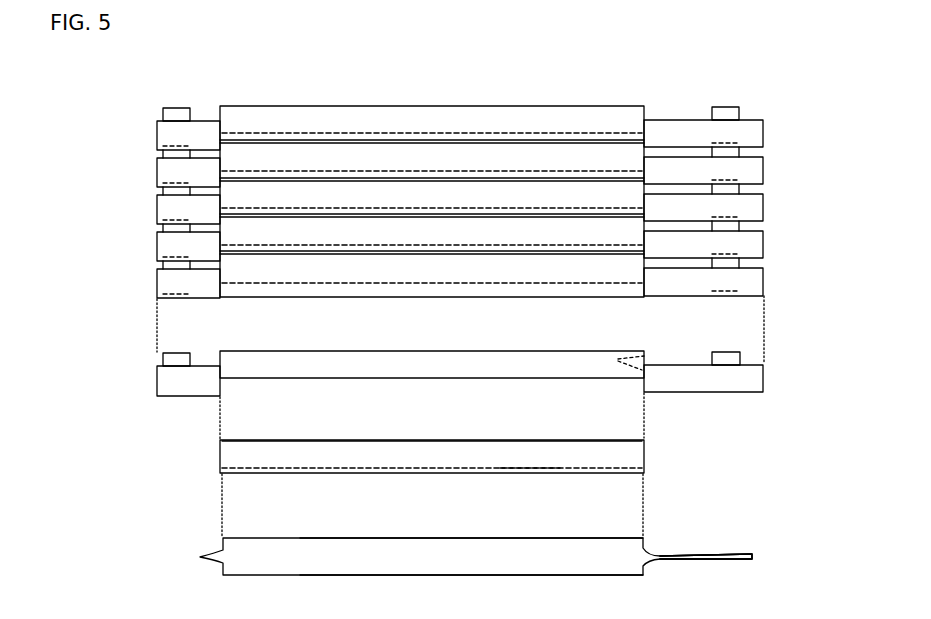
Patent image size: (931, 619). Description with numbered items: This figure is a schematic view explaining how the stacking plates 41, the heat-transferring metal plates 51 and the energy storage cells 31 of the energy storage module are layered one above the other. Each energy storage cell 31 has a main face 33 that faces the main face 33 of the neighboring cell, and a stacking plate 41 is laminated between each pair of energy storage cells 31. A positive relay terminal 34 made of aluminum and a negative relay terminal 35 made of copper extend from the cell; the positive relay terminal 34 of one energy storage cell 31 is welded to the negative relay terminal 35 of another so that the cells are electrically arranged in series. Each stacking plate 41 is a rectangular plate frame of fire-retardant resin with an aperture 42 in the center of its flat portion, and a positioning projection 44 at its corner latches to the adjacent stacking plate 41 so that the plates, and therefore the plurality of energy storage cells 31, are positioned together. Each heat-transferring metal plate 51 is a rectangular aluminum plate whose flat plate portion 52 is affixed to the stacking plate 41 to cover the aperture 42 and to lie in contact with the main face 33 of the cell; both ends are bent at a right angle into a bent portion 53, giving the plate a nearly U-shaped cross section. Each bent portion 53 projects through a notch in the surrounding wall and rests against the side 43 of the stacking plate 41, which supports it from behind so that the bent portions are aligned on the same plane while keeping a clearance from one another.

The energy storage cell 31 is at (205, 553).
The main face 33 is at (460, 526).
The positive relay terminal 34 is at (695, 556).
The negative relay terminal 35 is at (706, 556).
The stacking plate 41 is at (157, 133).
The aperture 42 is at (650, 357).
The side 43 is at (295, 355).
The positioning projection 44 is at (180, 108).
The heat-transferring metal plate 51 is at (558, 178).
The flat plate portion 52 is at (522, 462).
The bent portion 53 is at (362, 449).